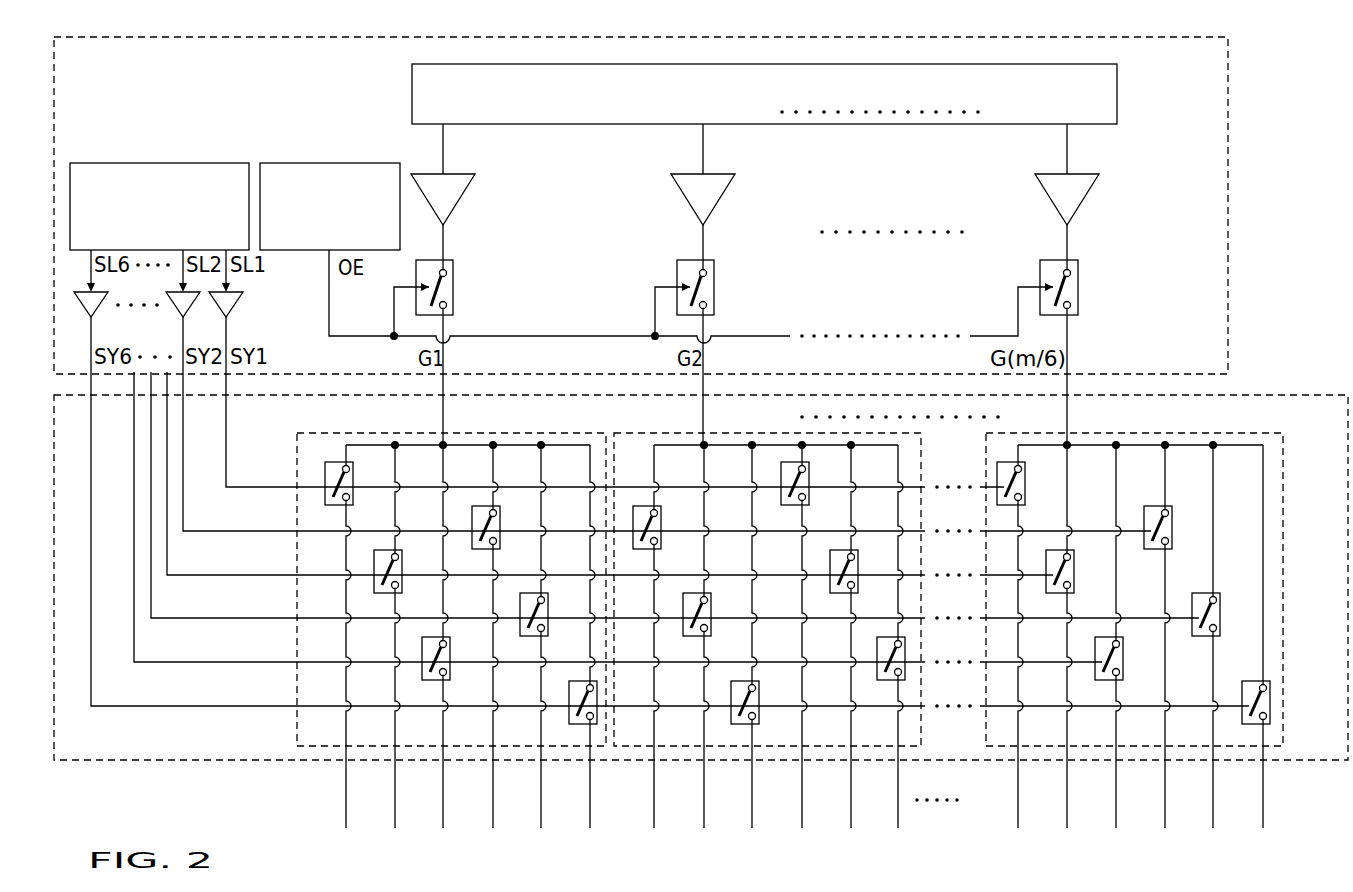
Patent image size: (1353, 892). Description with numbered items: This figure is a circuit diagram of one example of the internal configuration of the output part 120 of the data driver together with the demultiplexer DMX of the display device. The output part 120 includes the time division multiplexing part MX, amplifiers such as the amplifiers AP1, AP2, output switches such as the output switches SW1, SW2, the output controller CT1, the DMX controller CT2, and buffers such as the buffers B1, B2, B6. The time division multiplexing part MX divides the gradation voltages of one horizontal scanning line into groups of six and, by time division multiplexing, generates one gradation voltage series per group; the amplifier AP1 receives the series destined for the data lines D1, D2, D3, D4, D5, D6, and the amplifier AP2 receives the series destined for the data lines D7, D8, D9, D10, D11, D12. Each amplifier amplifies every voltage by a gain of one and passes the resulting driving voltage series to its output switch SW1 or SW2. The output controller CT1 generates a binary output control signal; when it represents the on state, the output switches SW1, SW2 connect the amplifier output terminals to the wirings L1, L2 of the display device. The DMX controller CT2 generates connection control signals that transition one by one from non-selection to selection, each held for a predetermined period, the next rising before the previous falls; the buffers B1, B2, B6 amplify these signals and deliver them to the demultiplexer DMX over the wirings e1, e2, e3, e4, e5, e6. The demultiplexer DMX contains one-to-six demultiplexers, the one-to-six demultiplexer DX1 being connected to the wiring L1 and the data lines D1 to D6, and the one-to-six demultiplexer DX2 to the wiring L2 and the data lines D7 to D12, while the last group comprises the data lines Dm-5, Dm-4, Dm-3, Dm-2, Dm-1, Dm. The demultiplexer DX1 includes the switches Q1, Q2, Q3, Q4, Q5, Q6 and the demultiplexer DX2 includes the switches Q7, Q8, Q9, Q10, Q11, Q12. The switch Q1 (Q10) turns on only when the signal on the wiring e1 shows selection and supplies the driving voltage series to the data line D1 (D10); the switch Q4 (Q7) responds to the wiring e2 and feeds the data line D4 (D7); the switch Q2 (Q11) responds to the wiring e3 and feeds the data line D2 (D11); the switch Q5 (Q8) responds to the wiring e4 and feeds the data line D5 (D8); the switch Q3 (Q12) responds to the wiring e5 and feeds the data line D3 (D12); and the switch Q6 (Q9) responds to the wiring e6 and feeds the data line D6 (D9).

The output part 120 is at (1166, 37).
The time division multiplexing part MX is at (1117, 92).
The output controller CT1 is at (330, 163).
The DMX controller CT2 is at (205, 163).
The amplifier AP1 is at (465, 198).
The amplifier AP2 is at (725, 198).
The output switch SW1 is at (453, 280).
The output switch SW2 is at (714, 280).
The buffer B1 is at (235, 305).
The buffer B2 is at (192, 305).
The buffer B6 is at (100, 305).
The demultiplexer DMX is at (1283, 395).
The wiring L1 is at (443, 420).
The wiring L2 is at (703, 420).
The 1 to 6 demultiplexer DX1 is at (297, 736).
The 1 to 6 demultiplexer DX2 is at (921, 737).
The switch Q1 is at (327, 506).
The switch Q2 is at (376, 594).
The switch Q3 is at (424, 681).
The switch Q4 is at (474, 550).
The switch Q5 is at (522, 637).
The switch Q6 is at (571, 725).
The switch Q7 is at (635, 550).
The switch Q8 is at (685, 637).
The switch Q9 is at (733, 725).
The switch Q10 is at (783, 506).
The switch Q11 is at (832, 594).
The switch Q12 is at (879, 681).
The wiring e1 is at (258, 487).
The wiring e2 is at (258, 531).
The wiring e3 is at (258, 575).
The wiring e4 is at (258, 618).
The wiring e5 is at (258, 662).
The wiring e6 is at (258, 706).
The data line D1 is at (344, 777).
The data line D2 is at (393, 777).
The data line D3 is at (441, 777).
The data line D4 is at (491, 777).
The data line D5 is at (539, 777).
The data line D6 is at (588, 777).
The data line D7 is at (652, 777).
The data line D8 is at (702, 777).
The data line D9 is at (750, 777).
The data line D10 is at (800, 777).
The data line D11 is at (849, 777).
The data line D12 is at (896, 777).
The data line Dm-5 is at (1016, 777).
The data line Dm-4 is at (1065, 777).
The data line Dm-3 is at (1114, 777).
The data line Dm-2 is at (1163, 777).
The data line Dm-1 is at (1211, 777).
The data line Dm is at (1261, 777).